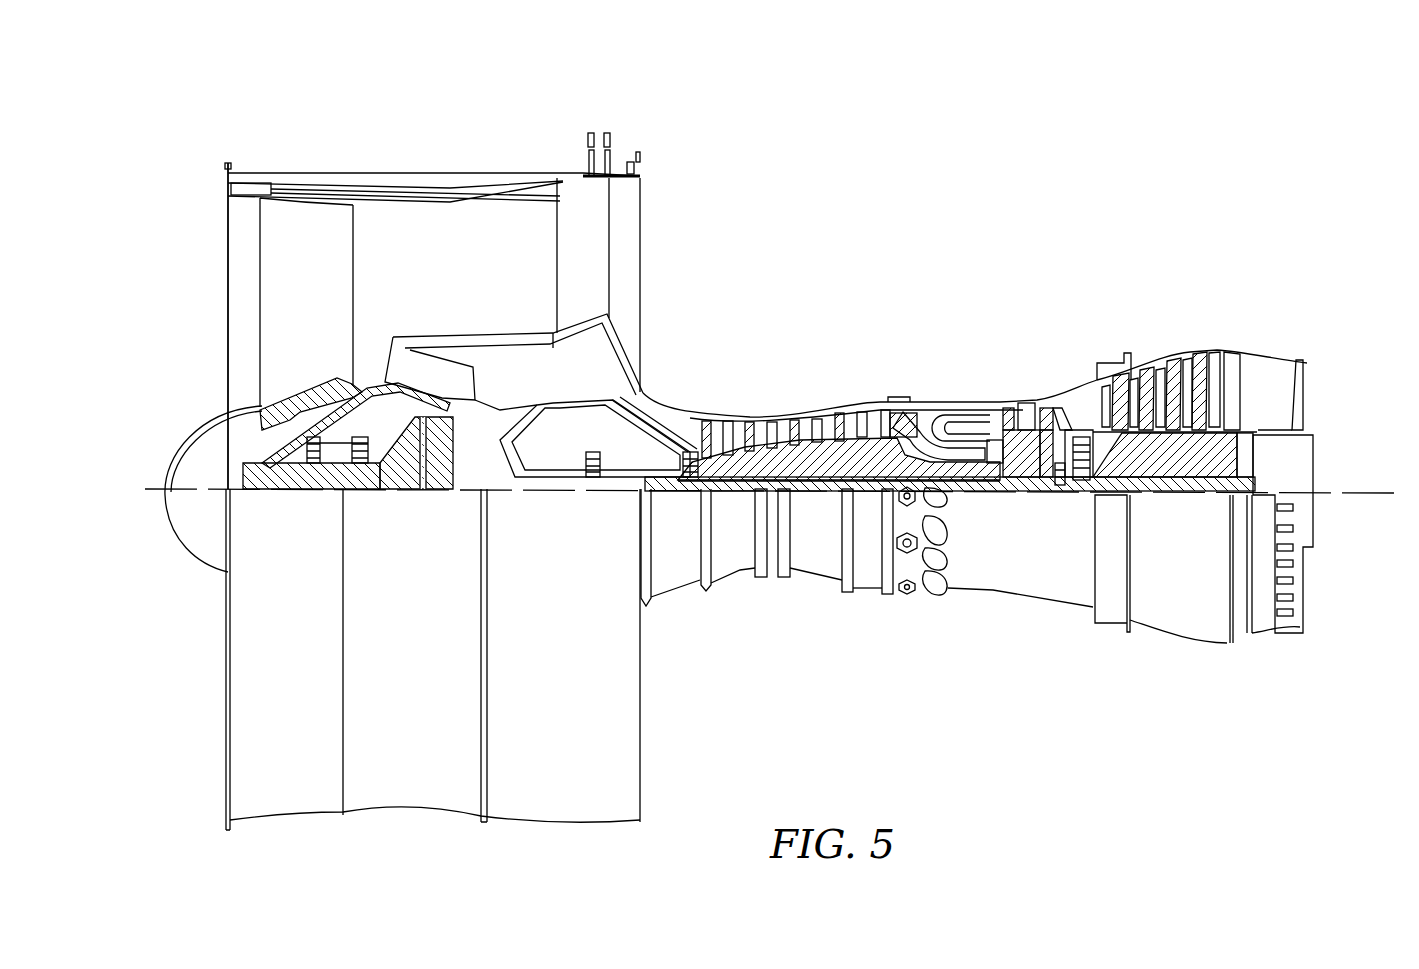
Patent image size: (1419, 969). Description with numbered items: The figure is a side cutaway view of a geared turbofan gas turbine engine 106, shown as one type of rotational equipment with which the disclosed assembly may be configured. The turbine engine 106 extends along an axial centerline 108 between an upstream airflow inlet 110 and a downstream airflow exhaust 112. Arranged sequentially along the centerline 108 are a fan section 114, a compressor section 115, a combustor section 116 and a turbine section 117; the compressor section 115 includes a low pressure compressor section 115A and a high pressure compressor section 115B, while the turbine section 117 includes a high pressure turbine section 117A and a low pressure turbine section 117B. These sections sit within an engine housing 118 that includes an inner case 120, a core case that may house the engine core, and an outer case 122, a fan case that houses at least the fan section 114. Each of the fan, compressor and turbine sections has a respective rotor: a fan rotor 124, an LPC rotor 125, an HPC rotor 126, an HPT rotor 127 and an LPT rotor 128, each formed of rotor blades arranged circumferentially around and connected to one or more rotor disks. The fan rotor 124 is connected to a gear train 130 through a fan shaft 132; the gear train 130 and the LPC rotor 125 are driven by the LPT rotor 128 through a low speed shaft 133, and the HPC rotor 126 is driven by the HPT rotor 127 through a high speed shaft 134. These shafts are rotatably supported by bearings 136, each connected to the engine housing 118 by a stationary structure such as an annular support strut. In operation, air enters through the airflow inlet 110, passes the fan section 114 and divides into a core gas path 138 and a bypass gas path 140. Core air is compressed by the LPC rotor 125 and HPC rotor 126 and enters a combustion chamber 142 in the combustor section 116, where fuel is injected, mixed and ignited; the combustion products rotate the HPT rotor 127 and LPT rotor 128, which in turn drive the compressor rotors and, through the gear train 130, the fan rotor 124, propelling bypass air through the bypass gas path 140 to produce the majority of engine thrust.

The geared turbofan gas turbine engine 106 is at (196, 151).
The axial centerline 108 is at (1358, 492).
The upstream airflow inlet 110 is at (228, 246).
The downstream airflow exhaust 112 is at (1305, 390).
The fan section 114 is at (395, 150).
The compressor section 115 is at (867, 88).
The low pressure compressor section 115A is at (642, 136).
The high pressure compressor section 115B is at (866, 331).
The combustor section 116 is at (992, 328).
The turbine section 117 is at (1262, 260).
The high pressure turbine section 117A is at (1078, 328).
The low pressure turbine section 117B is at (1262, 328).
The engine housing 118 is at (663, 612).
The inner case 120 is at (867, 590).
The outer case 122 is at (592, 823).
The fan rotor 124 is at (245, 410).
The LPC rotor 125 is at (550, 440).
The HPC rotor 126 is at (813, 452).
The HPT rotor 127 is at (1023, 467).
The LPT rotor 128 is at (1173, 435).
The gear train 130 is at (437, 489).
The fan shaft 132 is at (297, 489).
The low speed shaft 133 is at (1177, 493).
The high speed shaft 134 is at (953, 465).
The bearings 136 is at (340, 470).
The core gas path 138 is at (660, 420).
The bypass gas path 140 is at (494, 266).
The combustion chamber 142 is at (948, 430).